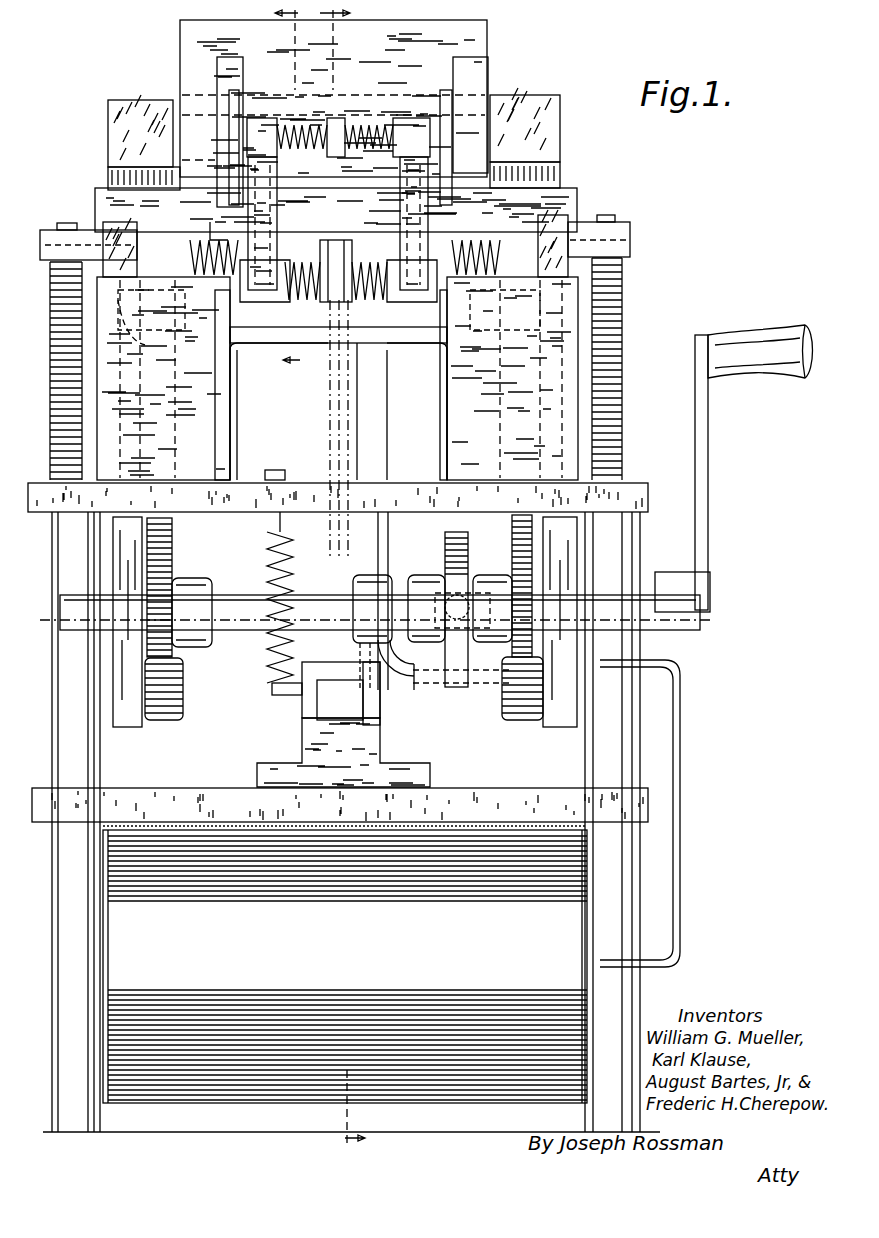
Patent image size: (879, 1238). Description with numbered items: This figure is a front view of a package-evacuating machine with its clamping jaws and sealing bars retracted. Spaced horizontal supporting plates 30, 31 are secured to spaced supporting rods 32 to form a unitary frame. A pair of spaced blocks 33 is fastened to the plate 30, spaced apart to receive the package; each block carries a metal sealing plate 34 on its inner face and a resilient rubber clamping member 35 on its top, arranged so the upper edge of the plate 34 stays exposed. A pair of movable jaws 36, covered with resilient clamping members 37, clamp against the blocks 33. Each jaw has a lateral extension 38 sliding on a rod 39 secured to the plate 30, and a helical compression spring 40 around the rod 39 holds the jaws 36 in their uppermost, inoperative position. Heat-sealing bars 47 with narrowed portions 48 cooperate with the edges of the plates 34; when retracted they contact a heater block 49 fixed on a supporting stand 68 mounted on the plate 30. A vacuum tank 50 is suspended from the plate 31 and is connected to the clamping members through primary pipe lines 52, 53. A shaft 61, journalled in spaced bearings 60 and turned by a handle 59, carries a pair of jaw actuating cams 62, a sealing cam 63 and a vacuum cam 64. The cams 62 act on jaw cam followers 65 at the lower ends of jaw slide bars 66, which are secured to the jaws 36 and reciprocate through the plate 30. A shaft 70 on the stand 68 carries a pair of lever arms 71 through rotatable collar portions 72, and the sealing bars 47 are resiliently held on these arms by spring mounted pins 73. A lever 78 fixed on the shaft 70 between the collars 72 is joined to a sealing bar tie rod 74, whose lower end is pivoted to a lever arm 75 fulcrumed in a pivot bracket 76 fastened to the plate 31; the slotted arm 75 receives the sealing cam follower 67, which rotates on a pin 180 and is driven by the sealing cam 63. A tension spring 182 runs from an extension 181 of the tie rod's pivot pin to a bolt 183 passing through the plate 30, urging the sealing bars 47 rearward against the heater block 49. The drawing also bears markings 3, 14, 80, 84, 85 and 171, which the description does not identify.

The section line 3- 3 is at (340, 584).
The section line 14- 14 is at (297, 199).
The supporting plate 30 is at (36, 514).
The supporting plate 31 is at (205, 795).
The supporting rods 32 is at (100, 776).
The blocks 33 is at (208, 437).
The sealing plate 34 is at (222, 340).
The clamping member 35 is at (329, 316).
The movable jaws 36 is at (336, 210).
The clamping members 37 is at (224, 250).
The lateral extension 38 is at (82, 228).
The rod 39 is at (52, 318).
The helical compression spring 40 is at (52, 405).
The heat-sealing bars 47 is at (228, 78).
The narrowed portions 48 is at (222, 158).
The heater block 49 is at (333, 98).
The vacuum tank 50 is at (340, 938).
The primary pipe line 52 is at (243, 352).
The primary pipe line 53 is at (430, 350).
The handle 59 is at (762, 372).
The bearings 60 is at (160, 536).
The shaft 61 is at (222, 634).
The jaw actuating cams 62 is at (174, 556).
The sealing cam 63 is at (380, 566).
The vacuum cam 64 is at (445, 550).
The jaw cam followers 65 is at (165, 720).
The jaw slide bars 66 is at (125, 728).
The sealing cam follower 67 is at (340, 720).
The supporting stand 68 is at (127, 105).
The shaft 70 is at (560, 225).
The lever arms 71 is at (278, 190).
The collar portions 72 is at (290, 256).
The spring mounted pins 73 is at (300, 124).
The sealing bar tie rod 74 is at (346, 462).
The lever arm 75 is at (305, 705).
The pivot bracket 76 is at (362, 760).
The lever 78 is at (337, 252).
The ring 80 is at (462, 592).
The pipe 84 is at (682, 824).
The member 85 is at (390, 420).
The bracket 171 is at (212, 232).
The pin 180 is at (372, 690).
The extension 181 is at (270, 689).
The tension spring 182 is at (294, 578).
The bolt 183 is at (278, 470).